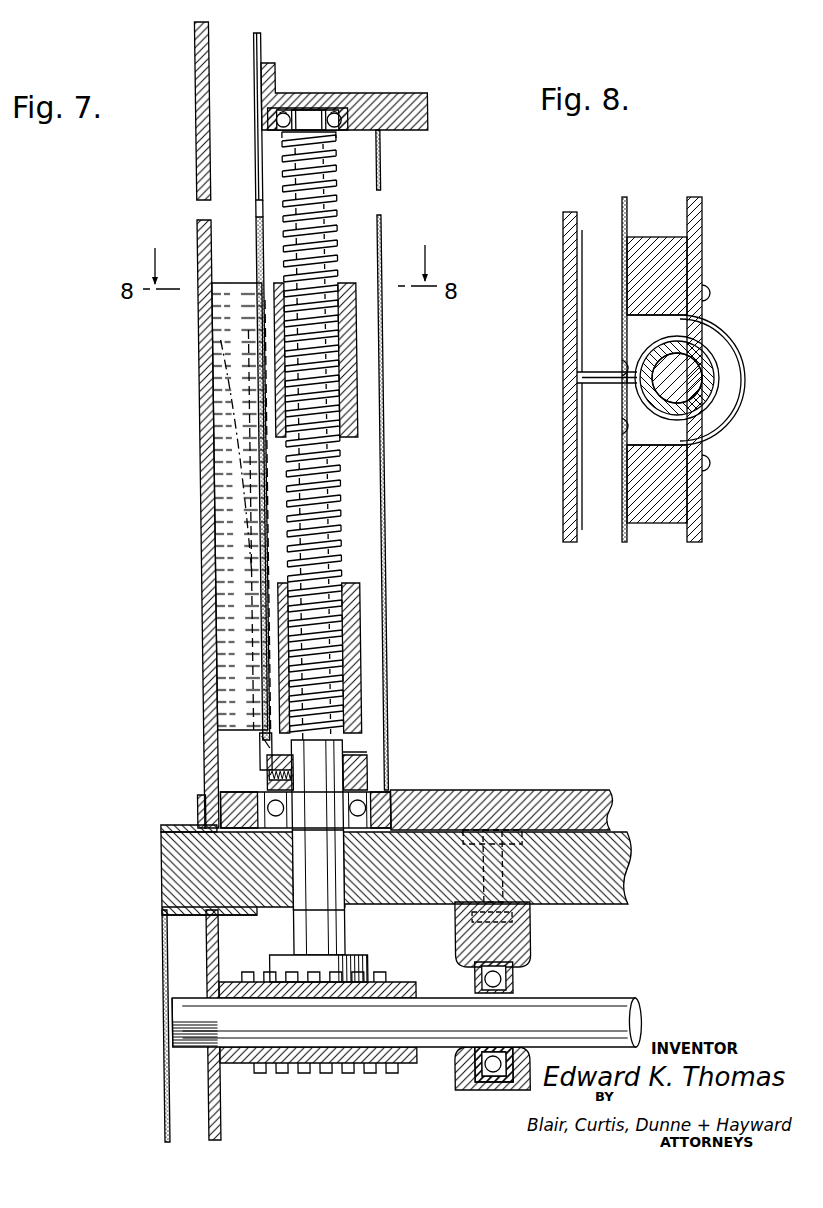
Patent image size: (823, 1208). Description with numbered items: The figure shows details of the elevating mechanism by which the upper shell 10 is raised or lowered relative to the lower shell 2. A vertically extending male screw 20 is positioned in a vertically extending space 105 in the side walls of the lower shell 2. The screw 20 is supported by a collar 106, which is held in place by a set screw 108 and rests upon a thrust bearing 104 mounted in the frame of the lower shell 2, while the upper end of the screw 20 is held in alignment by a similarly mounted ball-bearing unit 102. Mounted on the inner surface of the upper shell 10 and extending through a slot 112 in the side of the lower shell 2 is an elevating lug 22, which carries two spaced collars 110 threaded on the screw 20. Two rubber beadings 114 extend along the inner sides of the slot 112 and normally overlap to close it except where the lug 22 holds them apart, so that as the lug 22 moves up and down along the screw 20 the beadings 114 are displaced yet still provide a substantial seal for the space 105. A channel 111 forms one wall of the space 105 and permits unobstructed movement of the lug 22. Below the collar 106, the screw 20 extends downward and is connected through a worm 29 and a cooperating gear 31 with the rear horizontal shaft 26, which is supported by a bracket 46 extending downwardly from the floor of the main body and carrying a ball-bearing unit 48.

In FIG. 7, the upper shell 10 is at (196, 160).
In FIG. 8, the upper shell 10 is at (561, 243).
In FIG. 7, the lower shell 2 is at (256, 172).
In FIG. 8, the lower shell 2 is at (622, 208).
In FIG. 7, the ball-bearing unit 102 is at (330, 110).
In FIG. 7, the slot 112 is at (258, 228).
In FIG. 8, the slot 112 is at (623, 398).
In FIG. 7, the rubber beadings 114 is at (265, 232).
In FIG. 8, the rubber beadings 114 is at (622, 368).
In FIG. 7, the male screw 20 is at (320, 203).
In FIG. 8, the male screw 20 is at (697, 370).
In FIG. 7, the channel 111 is at (383, 190).
In FIG. 8, the channel 111 is at (744, 376).
In FIG. 7, the space 105 is at (363, 251).
In FIG. 8, the space 105 is at (697, 328).
In FIG. 7, the collars 110 is at (343, 336).
In FIG. 8, the collars 110 is at (700, 394).
In FIG. 7, the elevating lug 22 is at (236, 468).
In FIG. 8, the elevating lug 22 is at (577, 380).
In FIG. 7, the collar 106 is at (355, 761).
In FIG. 7, the thrust bearing 104 is at (375, 786).
In FIG. 7, the set screw 108 is at (262, 777).
In FIG. 7, the gear 31 is at (281, 958).
In FIG. 7, the bracket 46 is at (522, 932).
In FIG. 7, the ball-bearing unit 48 is at (507, 982).
In FIG. 7, the worm 29 is at (275, 1065).
In FIG. 7, the rear horizontal shaft 26 is at (430, 1026).